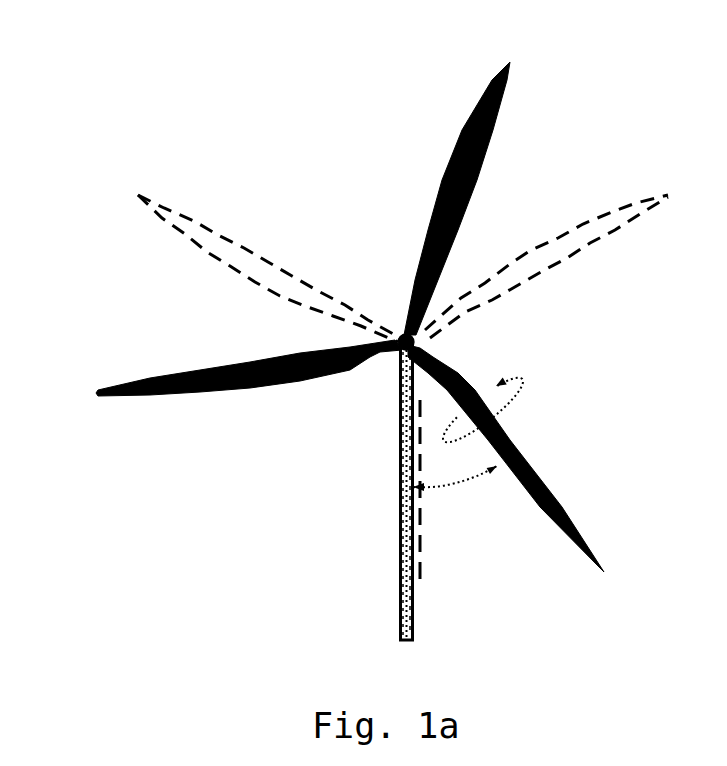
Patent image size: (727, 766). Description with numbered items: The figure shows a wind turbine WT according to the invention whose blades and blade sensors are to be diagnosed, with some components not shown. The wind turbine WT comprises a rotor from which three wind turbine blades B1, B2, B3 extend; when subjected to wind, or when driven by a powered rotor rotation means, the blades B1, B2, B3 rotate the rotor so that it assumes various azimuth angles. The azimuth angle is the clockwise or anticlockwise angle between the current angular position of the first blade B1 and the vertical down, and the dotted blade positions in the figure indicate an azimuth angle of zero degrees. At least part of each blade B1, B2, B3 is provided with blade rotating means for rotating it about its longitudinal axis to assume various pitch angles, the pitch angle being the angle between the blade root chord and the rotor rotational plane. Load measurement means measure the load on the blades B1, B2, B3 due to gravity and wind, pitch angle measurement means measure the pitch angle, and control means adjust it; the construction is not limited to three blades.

The first wind turbine blade B1 is at (536, 468).
The second wind turbine blade B2 is at (216, 299).
The third wind turbine blade B3 is at (536, 179).
The wind turbine WT is at (237, 493).